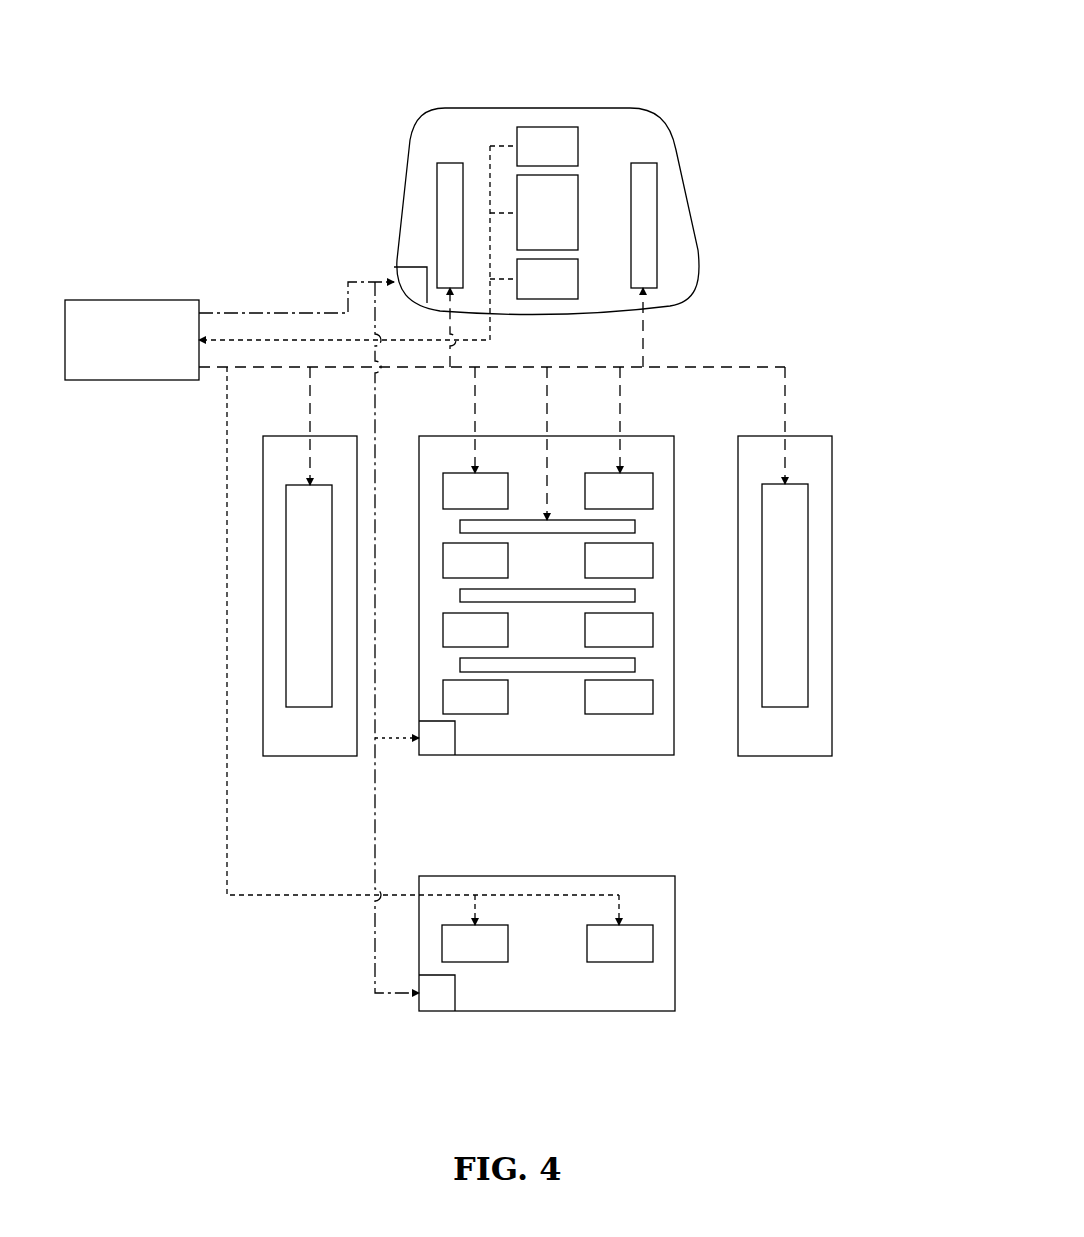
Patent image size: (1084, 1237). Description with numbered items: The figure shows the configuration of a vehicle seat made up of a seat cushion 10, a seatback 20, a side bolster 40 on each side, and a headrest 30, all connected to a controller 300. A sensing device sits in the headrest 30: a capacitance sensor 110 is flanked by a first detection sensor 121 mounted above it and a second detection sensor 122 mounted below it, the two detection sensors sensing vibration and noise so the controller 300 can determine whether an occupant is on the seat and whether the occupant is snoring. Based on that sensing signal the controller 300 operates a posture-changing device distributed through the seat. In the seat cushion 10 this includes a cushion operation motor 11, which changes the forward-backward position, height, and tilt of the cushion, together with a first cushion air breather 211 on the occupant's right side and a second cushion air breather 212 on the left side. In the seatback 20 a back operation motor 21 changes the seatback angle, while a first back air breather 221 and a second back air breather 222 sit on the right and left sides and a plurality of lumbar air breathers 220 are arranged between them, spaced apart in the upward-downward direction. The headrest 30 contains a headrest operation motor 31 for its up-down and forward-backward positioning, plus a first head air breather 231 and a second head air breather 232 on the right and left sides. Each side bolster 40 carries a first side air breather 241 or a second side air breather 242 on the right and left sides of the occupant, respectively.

The seat cushion 10 is at (676, 900).
The cushion operation motor 11 is at (440, 1000).
The seatback 20 is at (662, 436).
The back operation motor 21 is at (437, 745).
The headrest 30 is at (603, 108).
The headrest operation motor 31 is at (410, 268).
The side bolster 40 is at (263, 472).
The capacitance sensor 110 is at (578, 238).
The first detection sensor 121 is at (578, 143).
The second detection sensor 122 is at (578, 281).
The first cushion air breather 211 is at (495, 962).
The second cushion air breather 212 is at (622, 962).
The lumbar air breathers 220 is at (572, 665).
The first back air breather 221 is at (445, 473).
The second back air breather 222 is at (653, 490).
The first head air breather 231 is at (437, 181).
The second head air breather 232 is at (657, 199).
The first side air breather 241 is at (286, 608).
The second side air breather 242 is at (808, 608).
The controller 300 is at (132, 300).